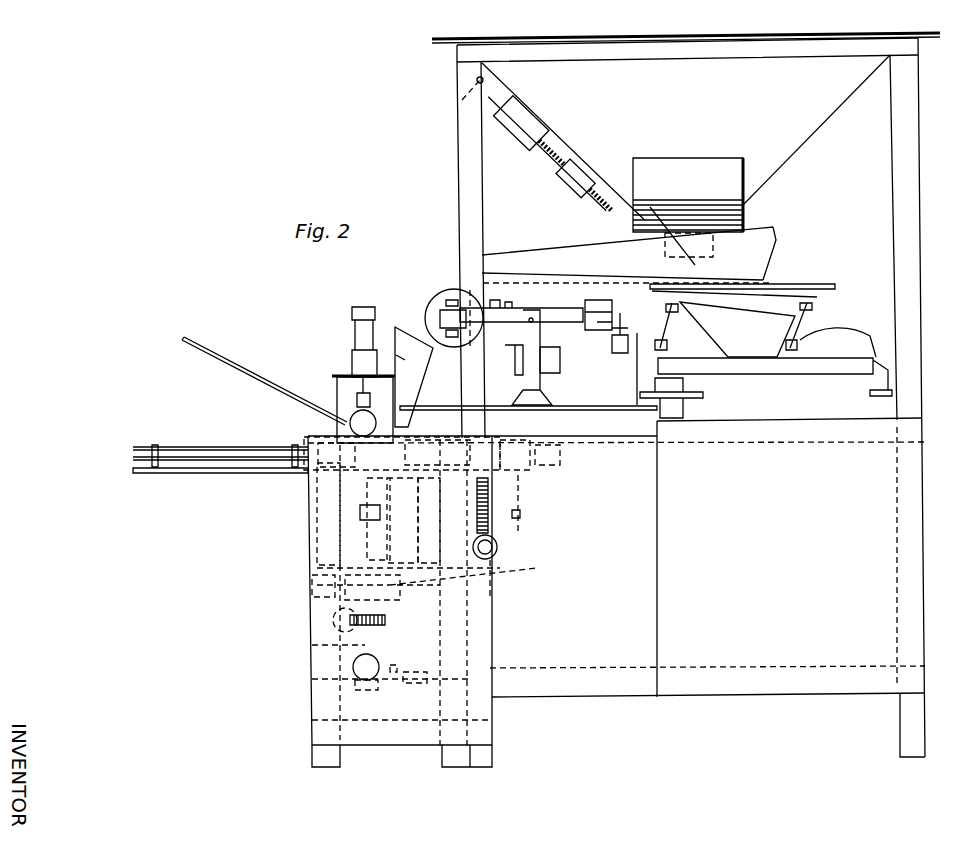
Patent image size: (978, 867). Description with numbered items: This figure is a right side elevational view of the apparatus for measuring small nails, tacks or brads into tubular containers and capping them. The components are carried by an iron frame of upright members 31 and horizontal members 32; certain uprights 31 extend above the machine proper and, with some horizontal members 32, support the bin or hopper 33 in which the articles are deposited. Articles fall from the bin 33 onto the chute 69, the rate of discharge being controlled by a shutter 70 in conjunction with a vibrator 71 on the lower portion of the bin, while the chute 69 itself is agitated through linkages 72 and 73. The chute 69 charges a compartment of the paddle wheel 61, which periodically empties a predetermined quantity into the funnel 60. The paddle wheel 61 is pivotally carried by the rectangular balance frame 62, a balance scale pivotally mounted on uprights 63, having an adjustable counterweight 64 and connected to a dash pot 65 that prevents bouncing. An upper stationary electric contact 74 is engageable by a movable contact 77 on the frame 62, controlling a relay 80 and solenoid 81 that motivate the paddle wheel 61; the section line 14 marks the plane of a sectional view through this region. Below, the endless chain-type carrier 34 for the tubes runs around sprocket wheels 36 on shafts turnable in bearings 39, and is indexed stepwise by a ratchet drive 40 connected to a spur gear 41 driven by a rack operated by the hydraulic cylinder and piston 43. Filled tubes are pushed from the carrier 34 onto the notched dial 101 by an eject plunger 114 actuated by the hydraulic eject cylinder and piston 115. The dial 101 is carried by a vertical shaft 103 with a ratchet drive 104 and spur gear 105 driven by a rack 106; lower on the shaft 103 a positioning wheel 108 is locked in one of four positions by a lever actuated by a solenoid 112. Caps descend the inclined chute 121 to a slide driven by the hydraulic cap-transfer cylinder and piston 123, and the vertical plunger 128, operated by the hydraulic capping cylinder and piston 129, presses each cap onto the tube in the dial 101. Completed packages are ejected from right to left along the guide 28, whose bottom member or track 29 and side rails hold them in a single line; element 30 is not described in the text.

The section line 14 is at (421, 295).
The guide 28 is at (182, 478).
The bottom member or track 29 is at (247, 470).
The guide rod 30 is at (188, 447).
The upright members 31 is at (460, 140).
The horizontal members 32 is at (814, 44).
The bin or hopper 33 is at (790, 130).
The endless chain-type carrier 34 is at (427, 592).
The sprocket wheels 36 is at (413, 560).
The bearings 39 is at (518, 522).
The ratchet drive 40 is at (433, 524).
The spur gear 41 is at (487, 477).
The hydraulic cylinder and piston 43 is at (498, 545).
The funnel 60 is at (398, 363).
The paddle wheel 61 is at (424, 316).
The rectangular balance frame 62 is at (576, 300).
The uprights 63 is at (540, 335).
The adjustable counterweight 64 is at (587, 298).
The dash pot 65 is at (614, 350).
The chute 69 is at (557, 277).
The shutter 70 is at (610, 183).
The vibrator 71 is at (723, 186).
The linkage 72 is at (667, 320).
The linkage 73 is at (817, 320).
The upper stationary electric contact 74 is at (862, 326).
The movable contact 77 is at (437, 323).
The electric relay 80 is at (560, 360).
The solenoid 81 is at (515, 350).
The notched dial 101 is at (330, 453).
The shaft 103 is at (358, 645).
The ratchet drive 104 is at (310, 583).
The spur gear 105 is at (376, 632).
The rack 106 is at (330, 617).
The positioning wheel 108 is at (312, 679).
The solenoid 112 is at (383, 662).
The eject plunger 114 is at (433, 452).
The hydraulic eject cylinder and piston 115 is at (535, 458).
The inclined chute 121 is at (185, 347).
The hydraulic cap-transfer cylinder and piston 123 is at (352, 418).
The vertical plunger 128 is at (357, 400).
The hydraulic capping cylinder and piston 129 is at (358, 333).